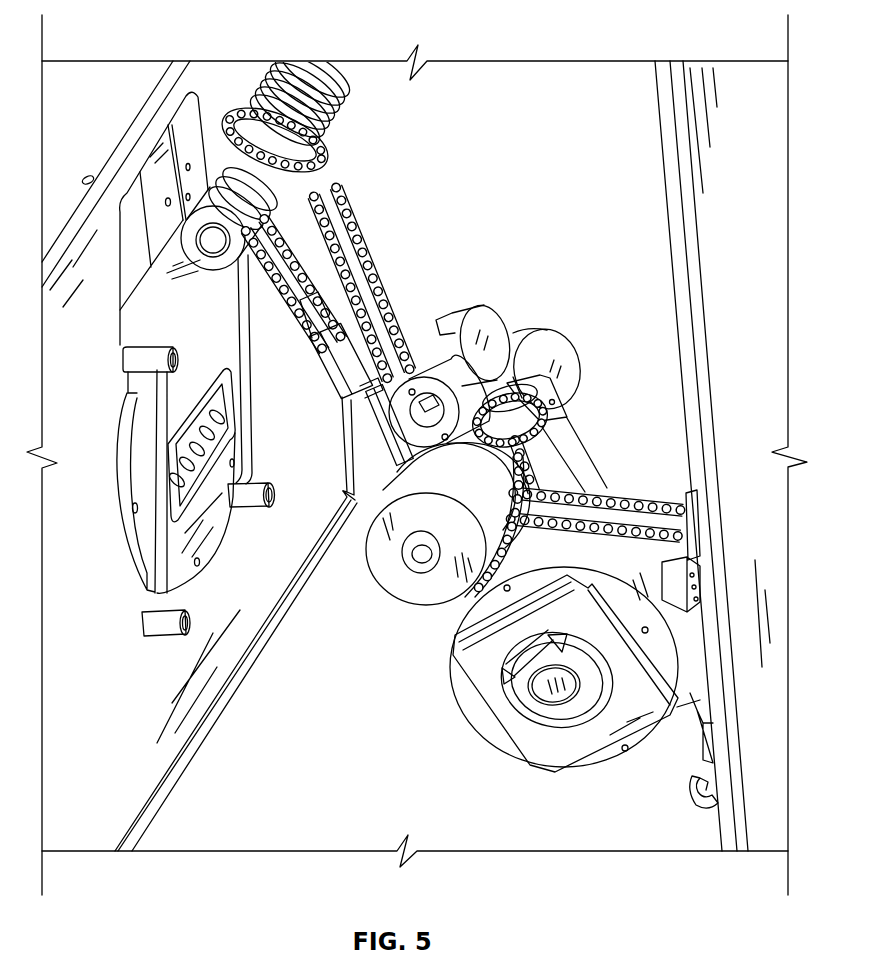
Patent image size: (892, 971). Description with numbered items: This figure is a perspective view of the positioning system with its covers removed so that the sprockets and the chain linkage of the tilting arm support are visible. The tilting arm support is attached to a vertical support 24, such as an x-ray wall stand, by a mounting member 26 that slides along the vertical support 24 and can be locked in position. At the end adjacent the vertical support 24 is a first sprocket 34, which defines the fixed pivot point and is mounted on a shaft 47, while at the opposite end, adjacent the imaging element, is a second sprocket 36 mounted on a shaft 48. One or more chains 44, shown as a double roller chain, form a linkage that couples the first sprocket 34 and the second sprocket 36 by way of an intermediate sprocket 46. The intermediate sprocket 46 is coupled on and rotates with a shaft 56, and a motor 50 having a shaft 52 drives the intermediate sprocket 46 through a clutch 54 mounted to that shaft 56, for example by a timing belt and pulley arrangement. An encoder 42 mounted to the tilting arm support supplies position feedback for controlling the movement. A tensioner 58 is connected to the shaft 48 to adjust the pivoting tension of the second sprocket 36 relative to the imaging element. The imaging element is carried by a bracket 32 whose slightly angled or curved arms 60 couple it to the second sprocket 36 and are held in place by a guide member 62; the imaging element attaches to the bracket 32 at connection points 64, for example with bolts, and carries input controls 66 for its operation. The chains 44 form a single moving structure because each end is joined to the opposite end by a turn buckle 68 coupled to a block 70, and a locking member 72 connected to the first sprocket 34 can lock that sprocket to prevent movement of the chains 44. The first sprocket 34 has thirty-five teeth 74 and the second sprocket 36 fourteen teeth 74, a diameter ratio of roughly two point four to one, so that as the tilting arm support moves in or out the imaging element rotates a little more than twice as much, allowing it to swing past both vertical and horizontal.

The vertical support 24 is at (660, 133).
The mounting member 26 is at (692, 692).
The bracket 32 is at (152, 477).
The first sprocket 34 is at (453, 650).
The second sprocket 36 is at (330, 170).
The encoder 42 is at (553, 343).
The chains 44 is at (350, 215).
The intermediate sprocket 46 is at (567, 412).
The shaft 47 is at (563, 697).
The shaft 48 is at (200, 187).
The motor 50 is at (484, 326).
The shaft 52 is at (420, 408).
The clutch 54 is at (407, 583).
The shaft 56 is at (563, 455).
The tensioner 58 is at (326, 72).
The arms 60 is at (157, 307).
The guide member 62 is at (207, 163).
The connection points 64 is at (118, 367).
The input controls 66 is at (186, 474).
The turn buckle 68 is at (397, 430).
The block 70 is at (330, 362).
The locking member 72 is at (492, 702).
The teeth 74 is at (335, 195).